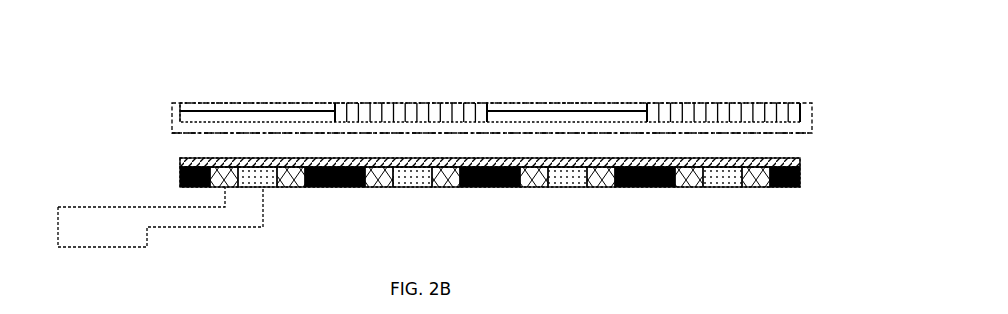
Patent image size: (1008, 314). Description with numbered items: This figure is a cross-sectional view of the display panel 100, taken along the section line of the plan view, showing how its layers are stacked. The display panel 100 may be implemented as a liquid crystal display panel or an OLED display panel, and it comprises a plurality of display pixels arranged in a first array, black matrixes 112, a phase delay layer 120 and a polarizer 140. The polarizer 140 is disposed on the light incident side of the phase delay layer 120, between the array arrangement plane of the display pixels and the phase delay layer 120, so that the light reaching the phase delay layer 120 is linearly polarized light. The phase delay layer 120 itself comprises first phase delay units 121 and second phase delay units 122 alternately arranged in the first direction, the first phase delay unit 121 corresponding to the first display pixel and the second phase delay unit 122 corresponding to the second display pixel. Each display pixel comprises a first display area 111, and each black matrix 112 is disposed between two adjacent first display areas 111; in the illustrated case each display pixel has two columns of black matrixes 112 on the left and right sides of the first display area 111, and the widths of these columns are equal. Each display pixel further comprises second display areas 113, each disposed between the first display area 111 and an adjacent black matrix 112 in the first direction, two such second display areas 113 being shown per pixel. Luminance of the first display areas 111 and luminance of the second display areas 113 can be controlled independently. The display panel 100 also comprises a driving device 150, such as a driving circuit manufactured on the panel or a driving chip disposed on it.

The display panel 100 is at (862, 48).
The phase delay layer 120 is at (810, 93).
The first phase delay unit 121 is at (228, 109).
The second phase delay unit 122 is at (800, 117).
The polarizer 140 is at (800, 163).
The black matrix 112 is at (800, 177).
The second display area 113 is at (691, 182).
The first display area 111 is at (723, 182).
The driving device 150 is at (117, 207).